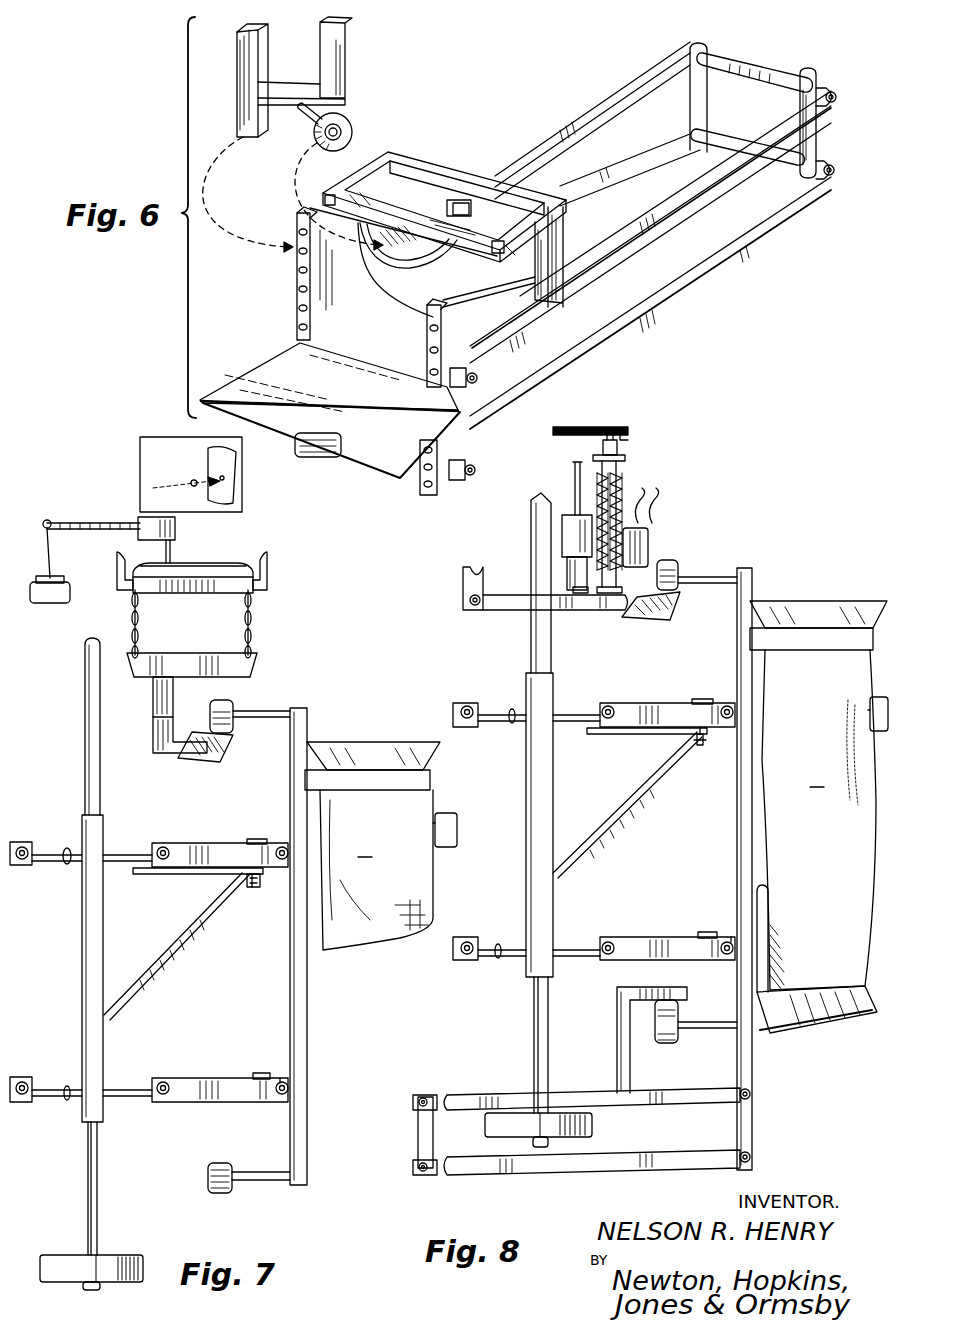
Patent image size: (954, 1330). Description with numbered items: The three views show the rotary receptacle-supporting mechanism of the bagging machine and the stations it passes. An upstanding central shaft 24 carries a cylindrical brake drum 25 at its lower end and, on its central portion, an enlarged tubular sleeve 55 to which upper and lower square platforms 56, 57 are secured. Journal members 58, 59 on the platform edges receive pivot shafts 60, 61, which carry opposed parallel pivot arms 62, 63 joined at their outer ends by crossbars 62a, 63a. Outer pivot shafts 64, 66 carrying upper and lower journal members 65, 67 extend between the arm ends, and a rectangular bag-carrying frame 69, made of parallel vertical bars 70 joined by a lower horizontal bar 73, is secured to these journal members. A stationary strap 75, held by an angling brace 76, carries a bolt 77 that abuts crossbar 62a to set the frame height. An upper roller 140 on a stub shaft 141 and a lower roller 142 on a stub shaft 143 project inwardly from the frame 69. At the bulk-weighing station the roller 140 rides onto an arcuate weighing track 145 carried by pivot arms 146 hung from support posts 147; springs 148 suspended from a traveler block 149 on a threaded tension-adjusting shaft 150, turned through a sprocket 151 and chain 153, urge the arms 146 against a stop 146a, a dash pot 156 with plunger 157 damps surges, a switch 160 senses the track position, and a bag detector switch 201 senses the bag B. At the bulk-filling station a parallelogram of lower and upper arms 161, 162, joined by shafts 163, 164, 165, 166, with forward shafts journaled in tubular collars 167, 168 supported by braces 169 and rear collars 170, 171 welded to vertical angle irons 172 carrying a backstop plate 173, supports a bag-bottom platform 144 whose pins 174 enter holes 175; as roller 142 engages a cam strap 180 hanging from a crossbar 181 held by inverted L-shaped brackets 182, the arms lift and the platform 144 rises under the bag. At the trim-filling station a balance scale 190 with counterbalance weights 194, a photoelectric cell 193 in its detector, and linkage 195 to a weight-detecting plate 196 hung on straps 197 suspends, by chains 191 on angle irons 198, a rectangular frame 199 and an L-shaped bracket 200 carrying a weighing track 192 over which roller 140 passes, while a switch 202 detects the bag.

In FIG. 7, the central shaft 24 is at (98, 946).
In FIG. 8, the central shaft 24 is at (524, 803).
In FIG. 7, the brake drum 25 is at (117, 1257).
In FIG. 8, the brake drum 25 is at (592, 1128).
In FIG. 7, the tubular sleeve 55 is at (101, 833).
In FIG. 8, the tubular sleeve 55 is at (530, 808).
In FIG. 7, the upper platform 56 is at (68, 864).
In FIG. 8, the upper platform 56 is at (512, 723).
In FIG. 7, the lower platform 57 is at (67, 1088).
In FIG. 8, the lower platform 57 is at (498, 958).
In FIG. 7, the journal members 58 is at (157, 848).
In FIG. 8, the journal members 58 is at (615, 703).
In FIG. 7, the journal members 59 is at (14, 1082).
In FIG. 8, the journal members 59 is at (467, 938).
In FIG. 7, the pivot shafts 60 is at (30, 846).
In FIG. 8, the pivot shafts 60 is at (468, 705).
In FIG. 7, the pivot shafts 61 is at (33, 1103).
In FIG. 8, the pivot shafts 61 is at (478, 942).
In FIG. 7, the pivot arms 62 is at (149, 845).
In FIG. 8, the pivot arms 62 is at (594, 714).
In FIG. 7, the crossbar 62a is at (257, 840).
In FIG. 8, the crossbar 62a is at (703, 699).
In FIG. 7, the pivot arms 63 is at (149, 1074).
In FIG. 8, the pivot arms 63 is at (594, 929).
In FIG. 7, the crossbar 63a is at (261, 1077).
In FIG. 8, the crossbar 63a is at (697, 932).
In FIG. 7, the outer pivot shafts 64 is at (257, 884).
In FIG. 8, the outer pivot shafts 64 is at (699, 734).
In FIG. 7, the upper journal members 65 is at (283, 844).
In FIG. 8, the upper journal members 65 is at (728, 705).
In FIG. 7, the pivot shafts 66 is at (284, 1104).
In FIG. 8, the pivot shafts 66 is at (707, 936).
In FIG. 7, the lower journal members 67 is at (281, 1078).
In FIG. 8, the lower journal members 67 is at (728, 937).
In FIG. 6, the bag-carrying frame 69 is at (300, 134).
In FIG. 7, the bag-carrying frame 69 is at (302, 937).
In FIG. 8, the bag-carrying frame 69 is at (750, 858).
In FIG. 6, the vertical bars 70 is at (240, 61).
In FIG. 7, the vertical bars 70 is at (293, 956).
In FIG. 8, the vertical bars 70 is at (737, 819).
In FIG. 6, the lower horizontal bar 73 is at (305, 91).
In FIG. 7, the strap 75 is at (180, 875).
In FIG. 8, the strap 75 is at (593, 735).
In FIG. 7, the brace 76 is at (173, 948).
In FIG. 8, the brace 76 is at (613, 798).
In FIG. 7, the bolt 77 is at (243, 886).
In FIG. 8, the bolt 77 is at (712, 743).
In FIG. 7, the upper roller 140 is at (233, 706).
In FIG. 8, the upper roller 140 is at (672, 560).
In FIG. 7, the stub shaft 141 is at (267, 713).
In FIG. 8, the stub shaft 141 is at (695, 577).
In FIG. 6, the lower roller 142 is at (351, 125).
In FIG. 7, the lower roller 142 is at (208, 1177).
In FIG. 8, the lower roller 142 is at (669, 1045).
In FIG. 6, the stub shaft 143 is at (322, 112).
In FIG. 7, the stub shaft 143 is at (270, 1172).
In FIG. 8, the stub shaft 143 is at (695, 1024).
In FIG. 6, the platform 144 is at (273, 363).
In FIG. 8, the platform 144 is at (822, 1020).
In FIG. 8, the weighing track 145 is at (672, 608).
In FIG. 8, the pivot arms 146 is at (545, 597).
In FIG. 8, the stop 146a is at (607, 612).
In FIG. 8, the support posts 147 is at (488, 585).
In FIG. 8, the springs 148 is at (618, 492).
In FIG. 8, the traveler block 149 is at (626, 457).
In FIG. 8, the tension-adjusting shaft 150 is at (618, 444).
In FIG. 8, the sprocket 151 is at (632, 428).
In FIG. 8, the chain 153 is at (573, 427).
In FIG. 8, the dash pot 156 is at (564, 514).
In FIG. 8, the plunger 157 is at (585, 512).
In FIG. 8, the switch 160 is at (648, 538).
In FIG. 6, the lower arms 161 is at (610, 172).
In FIG. 8, the lower arms 161 is at (682, 1166).
In FIG. 6, the upper arms 162 is at (588, 118).
In FIG. 8, the upper arms 162 is at (690, 1099).
In FIG. 6, the shaft 163 is at (833, 166).
In FIG. 8, the shaft 163 is at (434, 1158).
In FIG. 6, the shaft 164 is at (474, 473).
In FIG. 6, the shaft 165 is at (837, 93).
In FIG. 8, the shaft 165 is at (430, 1093).
In FIG. 6, the shaft 166 is at (477, 378).
In FIG. 6, the tubular collar 167 is at (738, 141).
In FIG. 8, the tubular collar 167 is at (432, 1180).
In FIG. 6, the tubular collar 168 is at (783, 78).
In FIG. 8, the tubular collar 168 is at (434, 1113).
In FIG. 6, the end post 169 is at (813, 139).
In FIG. 8, the end post 169 is at (446, 1125).
In FIG. 6, the tubular collar 170 is at (447, 453).
In FIG. 6, the tubular collar 171 is at (448, 355).
In FIG. 6, the angle irons 172 is at (297, 258).
In FIG. 8, the angle irons 172 is at (791, 974).
In FIG. 6, the plate 173 is at (388, 312).
In FIG. 8, the pins 174 is at (771, 985).
In FIG. 6, the holes 175 is at (296, 301).
In FIG. 6, the cam strap 180 is at (428, 293).
In FIG. 8, the cam strap 180 is at (639, 1026).
In FIG. 6, the crossbar 181 is at (425, 212).
In FIG. 6, the inverted L-shaped brackets 182 is at (565, 258).
In FIG. 8, the inverted L-shaped brackets 182 is at (617, 1051).
In FIG. 7, the trim scale 190 is at (215, 547).
In FIG. 7, the chains 191 is at (238, 479).
In FIG. 7, the weighing track 192 is at (153, 629).
In FIG. 7, the photoelectric cell 193 is at (194, 479).
In FIG. 7, the counterbalance weights 194 is at (55, 577).
In FIG. 7, the linkage 195 is at (170, 541).
In FIG. 7, the weight-detecting plate 196 is at (228, 580).
In FIG. 7, the suspending straps 197 is at (268, 583).
In FIG. 7, the angle irons 198 is at (206, 555).
In FIG. 7, the rectangular frame 199 is at (173, 669).
In FIG. 7, the L-shaped bracket 200 is at (153, 729).
In FIG. 8, the bag detector switch 201 is at (868, 712).
In FIG. 7, the switch 202 is at (433, 824).